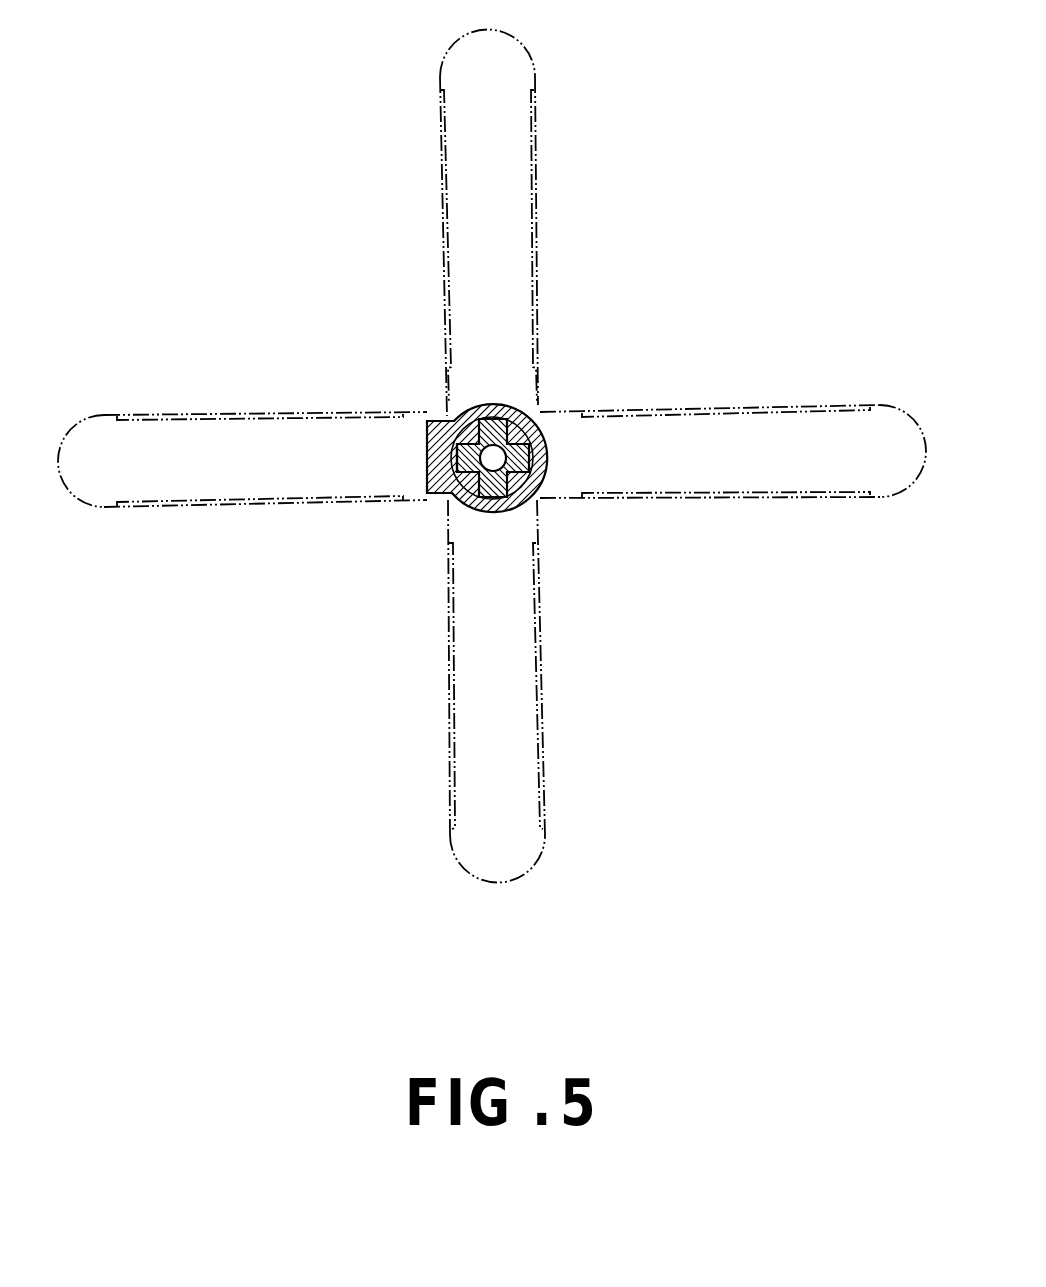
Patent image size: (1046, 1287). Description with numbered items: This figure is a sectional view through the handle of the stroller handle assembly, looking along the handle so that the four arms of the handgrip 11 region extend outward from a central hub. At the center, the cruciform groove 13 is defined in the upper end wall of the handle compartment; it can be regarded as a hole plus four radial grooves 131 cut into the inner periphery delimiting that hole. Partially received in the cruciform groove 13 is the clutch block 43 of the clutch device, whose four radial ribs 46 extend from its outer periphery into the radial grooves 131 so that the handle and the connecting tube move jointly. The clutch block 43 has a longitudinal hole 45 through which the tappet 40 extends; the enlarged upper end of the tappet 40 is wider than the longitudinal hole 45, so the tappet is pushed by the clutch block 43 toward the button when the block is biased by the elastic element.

The handgrip 11 is at (537, 218).
The cruciform groove 13 is at (512, 473).
The radial grooves 131 is at (486, 443).
The tappet 40 is at (490, 448).
The clutch block 43 is at (516, 445).
The longitudinal hole 45 is at (478, 470).
The radial ribs 46 is at (458, 462).